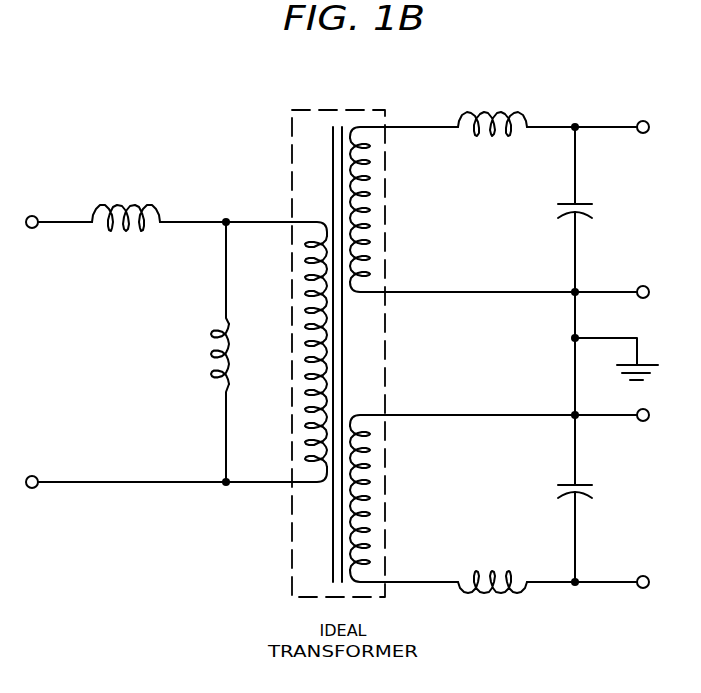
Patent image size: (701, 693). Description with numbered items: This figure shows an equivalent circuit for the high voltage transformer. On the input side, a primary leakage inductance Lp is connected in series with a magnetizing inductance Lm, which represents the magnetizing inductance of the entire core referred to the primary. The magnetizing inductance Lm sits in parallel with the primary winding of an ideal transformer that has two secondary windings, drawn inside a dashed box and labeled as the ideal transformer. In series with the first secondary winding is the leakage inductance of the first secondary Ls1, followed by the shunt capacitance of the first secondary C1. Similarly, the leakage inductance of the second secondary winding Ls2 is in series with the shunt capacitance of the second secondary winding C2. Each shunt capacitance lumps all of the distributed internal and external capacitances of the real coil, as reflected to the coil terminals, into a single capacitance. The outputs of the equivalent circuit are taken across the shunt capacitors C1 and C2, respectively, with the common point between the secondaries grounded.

The primary leakage inductance Lp is at (126, 202).
The magnetizing inductance Lm is at (199, 352).
The leakage inductance of the first secondary Ls1 is at (492, 107).
The leakage inductance of the second secondary winding Ls2 is at (492, 605).
The shunt capacitance of the first secondary C1 is at (594, 209).
The shunt capacitance of the second secondary winding C2 is at (595, 492).